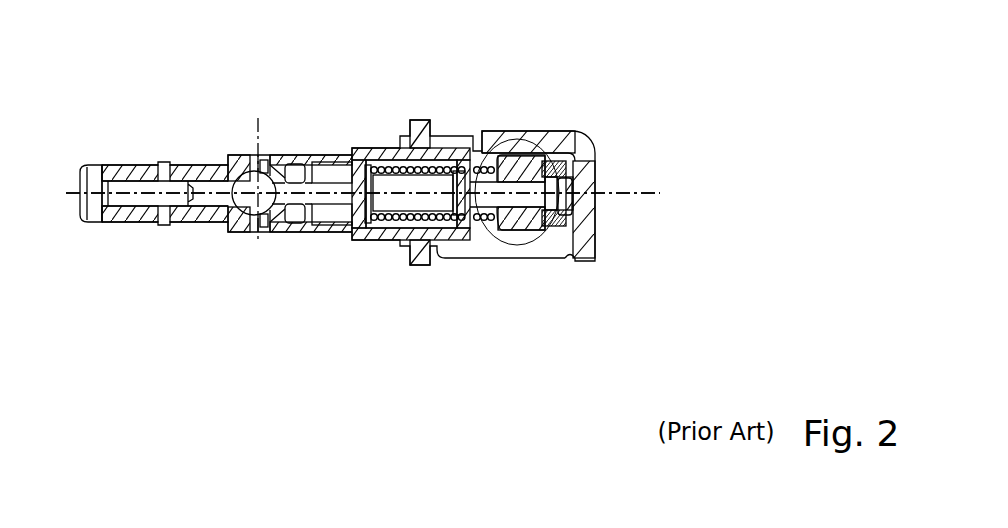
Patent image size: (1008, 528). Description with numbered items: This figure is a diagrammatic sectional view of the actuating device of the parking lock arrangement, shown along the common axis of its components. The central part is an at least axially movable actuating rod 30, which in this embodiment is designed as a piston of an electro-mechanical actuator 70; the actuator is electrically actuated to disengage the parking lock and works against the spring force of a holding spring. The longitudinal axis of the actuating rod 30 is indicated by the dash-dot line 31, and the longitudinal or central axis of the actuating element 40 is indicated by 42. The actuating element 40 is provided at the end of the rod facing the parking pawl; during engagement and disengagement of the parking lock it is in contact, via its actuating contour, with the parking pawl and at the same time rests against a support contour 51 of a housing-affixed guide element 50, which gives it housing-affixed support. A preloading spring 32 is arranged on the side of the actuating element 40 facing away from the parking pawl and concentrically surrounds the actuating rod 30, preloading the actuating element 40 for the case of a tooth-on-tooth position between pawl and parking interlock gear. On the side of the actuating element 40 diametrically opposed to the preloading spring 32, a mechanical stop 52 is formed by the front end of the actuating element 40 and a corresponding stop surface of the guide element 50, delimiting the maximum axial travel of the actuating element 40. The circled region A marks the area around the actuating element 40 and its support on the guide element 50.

The electro-mechanical actuator 70 is at (211, 134).
The actuating rod 30 is at (336, 187).
The preloading spring 32 is at (396, 166).
The actuating element 40 is at (526, 178).
The housing-affixed guide element 50 is at (570, 142).
The longitudinal axis of the actuating rod 31 is at (638, 193).
The longitudinal or central axis of the actuating element 42 is at (638, 193).
The support contour 51 is at (526, 186).
The detail region A is at (531, 238).
The mechanical stop 52 is at (596, 220).